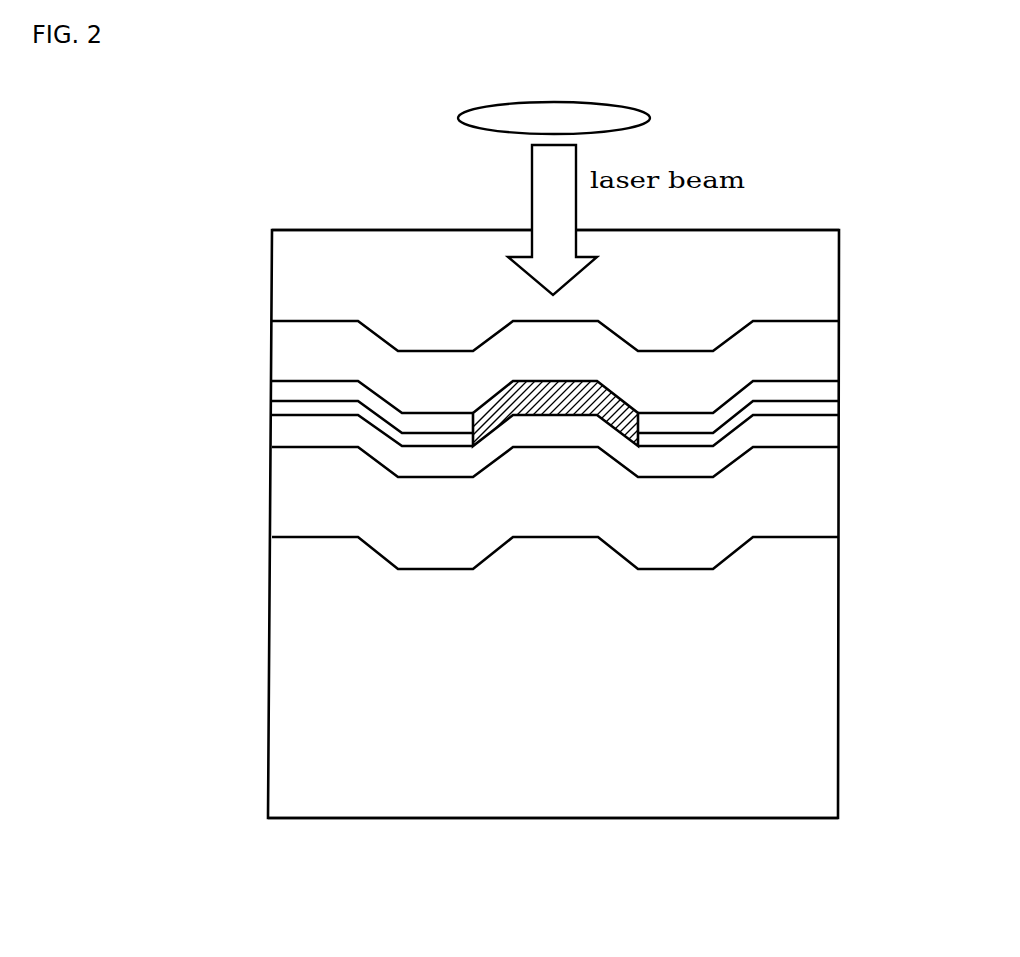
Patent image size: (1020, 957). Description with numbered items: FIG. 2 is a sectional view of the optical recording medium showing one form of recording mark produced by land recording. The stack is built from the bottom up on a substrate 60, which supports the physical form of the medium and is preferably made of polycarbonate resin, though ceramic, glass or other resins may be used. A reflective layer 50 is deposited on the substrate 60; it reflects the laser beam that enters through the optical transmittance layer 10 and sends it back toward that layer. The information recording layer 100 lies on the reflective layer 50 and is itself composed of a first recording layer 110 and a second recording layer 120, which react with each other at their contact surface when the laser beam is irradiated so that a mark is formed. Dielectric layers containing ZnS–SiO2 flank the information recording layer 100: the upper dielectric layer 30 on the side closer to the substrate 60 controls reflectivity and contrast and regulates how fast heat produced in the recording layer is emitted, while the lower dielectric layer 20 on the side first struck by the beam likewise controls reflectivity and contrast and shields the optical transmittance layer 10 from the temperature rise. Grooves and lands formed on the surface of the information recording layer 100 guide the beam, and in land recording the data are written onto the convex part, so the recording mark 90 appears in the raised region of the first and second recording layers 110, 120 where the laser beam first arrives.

The optical transmittance layer 10 is at (830, 275).
The lower dielectric layer 20 is at (830, 350).
The first recording layer 110 is at (830, 390).
The second recording layer 120 is at (830, 405).
The upper dielectric layer 30 is at (830, 430).
The reflective layer 50 is at (830, 495).
The substrate 60 is at (830, 684).
The recording mark 90 is at (573, 382).
The information recording layer 100 is at (252, 384).